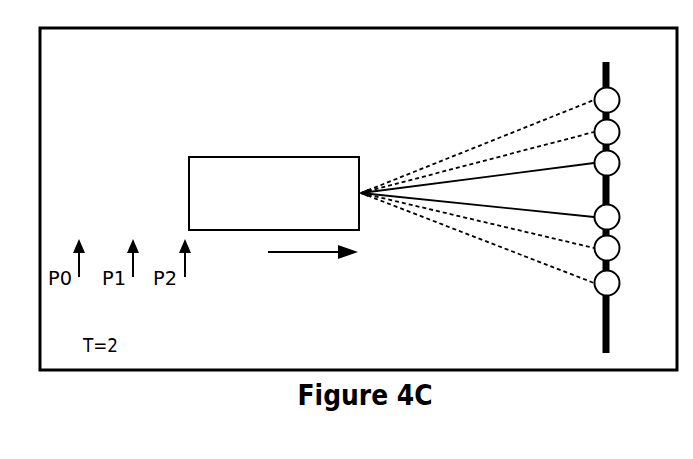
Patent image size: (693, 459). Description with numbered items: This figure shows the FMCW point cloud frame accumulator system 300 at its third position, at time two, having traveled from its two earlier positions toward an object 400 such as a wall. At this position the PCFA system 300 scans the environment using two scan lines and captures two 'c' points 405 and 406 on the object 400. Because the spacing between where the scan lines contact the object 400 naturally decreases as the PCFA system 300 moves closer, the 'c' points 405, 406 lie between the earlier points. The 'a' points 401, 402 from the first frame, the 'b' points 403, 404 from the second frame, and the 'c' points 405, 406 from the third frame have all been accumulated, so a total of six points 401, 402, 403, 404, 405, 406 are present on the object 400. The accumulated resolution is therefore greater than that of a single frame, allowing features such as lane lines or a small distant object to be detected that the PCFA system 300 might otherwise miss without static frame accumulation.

The FMCW point cloud frame accumulator (PCFA) system 300 is at (274, 193).
The object 400 is at (601, 77).
The 'a' point 401 is at (620, 100).
The 'a' point 402 is at (620, 283).
The 'b' point 403 is at (620, 132).
The 'b' point 404 is at (620, 248).
The 'c' point 405 is at (620, 163).
The 'c' point 406 is at (620, 217).